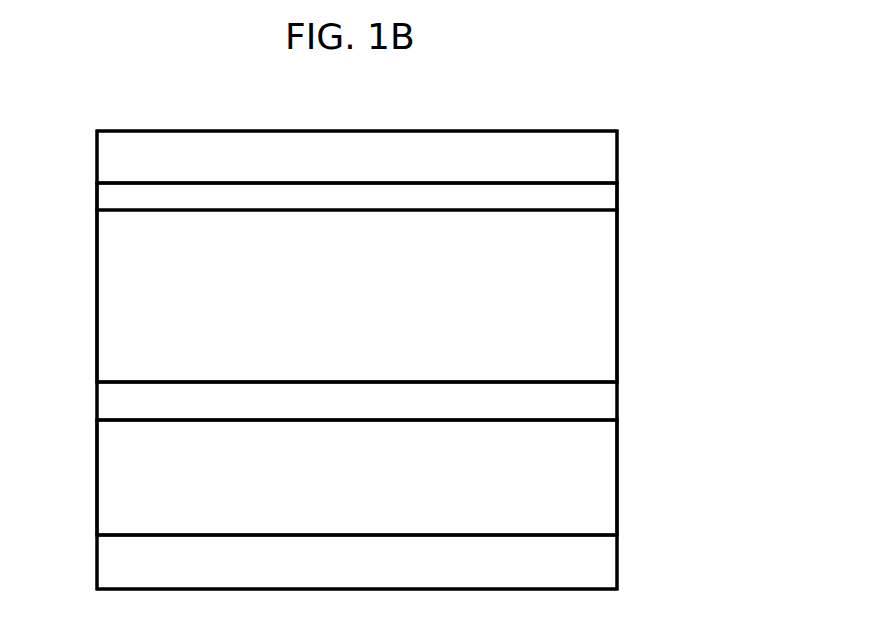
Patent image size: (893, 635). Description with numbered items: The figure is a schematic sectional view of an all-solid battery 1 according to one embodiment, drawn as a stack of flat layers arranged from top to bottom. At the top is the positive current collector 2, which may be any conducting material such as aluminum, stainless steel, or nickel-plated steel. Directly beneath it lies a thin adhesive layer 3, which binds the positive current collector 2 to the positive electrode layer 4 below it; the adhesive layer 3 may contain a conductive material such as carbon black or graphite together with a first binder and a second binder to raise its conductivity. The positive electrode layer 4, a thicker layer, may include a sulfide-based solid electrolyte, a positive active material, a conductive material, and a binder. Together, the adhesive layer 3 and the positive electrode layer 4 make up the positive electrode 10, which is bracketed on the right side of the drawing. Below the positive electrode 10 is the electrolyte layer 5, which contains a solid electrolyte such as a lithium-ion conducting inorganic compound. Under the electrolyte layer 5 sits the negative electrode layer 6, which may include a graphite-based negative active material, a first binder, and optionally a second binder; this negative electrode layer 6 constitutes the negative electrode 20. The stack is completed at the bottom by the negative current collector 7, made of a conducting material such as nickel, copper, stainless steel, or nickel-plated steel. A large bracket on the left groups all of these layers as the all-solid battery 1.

The all-solid battery 1 is at (85, 130).
The positive current collector 2 is at (612, 157).
The adhesive layer 3 is at (612, 198).
The positive electrode layer 4 is at (612, 297).
The electrolyte layer 5 is at (612, 402).
The negative electrode layer 6 is at (612, 478).
The negative current collector 7 is at (612, 563).
The positive electrode 10 is at (704, 192).
The negative electrode 20 is at (419, 477).